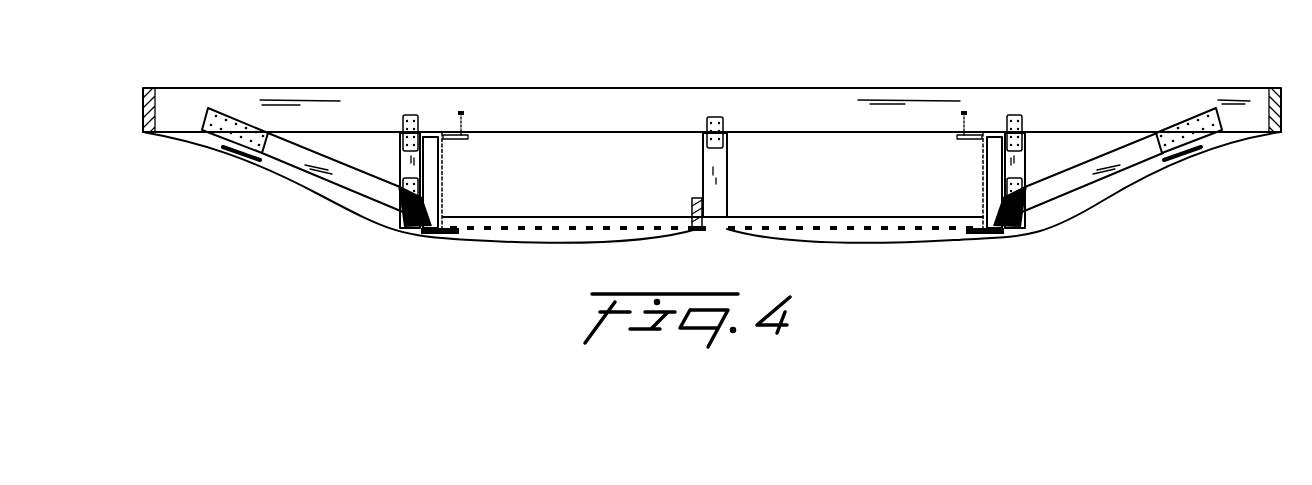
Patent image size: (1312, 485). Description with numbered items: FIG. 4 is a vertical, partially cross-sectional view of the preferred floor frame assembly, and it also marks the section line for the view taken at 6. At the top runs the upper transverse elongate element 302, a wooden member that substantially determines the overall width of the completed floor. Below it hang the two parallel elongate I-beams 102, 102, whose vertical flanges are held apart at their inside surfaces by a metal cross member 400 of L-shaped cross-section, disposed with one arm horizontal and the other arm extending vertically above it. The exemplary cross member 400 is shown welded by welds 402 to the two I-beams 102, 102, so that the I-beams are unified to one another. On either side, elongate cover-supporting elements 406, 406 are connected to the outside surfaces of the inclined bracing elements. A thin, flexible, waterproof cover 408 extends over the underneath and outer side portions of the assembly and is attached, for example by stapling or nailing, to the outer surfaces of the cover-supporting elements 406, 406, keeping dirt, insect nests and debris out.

The upper transverse elongate element 302 is at (580, 100).
The metal cross member 400 is at (567, 217).
The I-beam 102 is at (443, 162).
The weld 402 is at (447, 227).
The elongate cover-supporting element 406 is at (240, 155).
The cover 408 is at (175, 147).
The section line 6- 6 is at (823, 58).